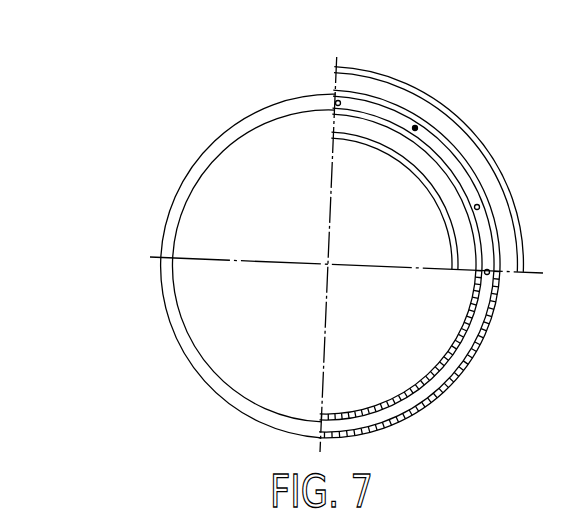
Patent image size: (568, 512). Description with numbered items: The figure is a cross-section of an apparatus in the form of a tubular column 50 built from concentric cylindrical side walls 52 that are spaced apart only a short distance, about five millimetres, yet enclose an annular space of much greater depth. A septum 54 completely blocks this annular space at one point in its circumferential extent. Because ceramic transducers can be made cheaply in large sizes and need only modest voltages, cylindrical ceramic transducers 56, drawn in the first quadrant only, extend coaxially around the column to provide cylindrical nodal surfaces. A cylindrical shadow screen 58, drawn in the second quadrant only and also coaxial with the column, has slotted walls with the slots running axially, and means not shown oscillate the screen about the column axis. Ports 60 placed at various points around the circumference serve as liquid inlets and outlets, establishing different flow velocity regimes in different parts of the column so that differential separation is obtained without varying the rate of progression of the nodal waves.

The tubular column 50 is at (431, 393).
The concentric cylindrical side walls 52 is at (478, 236).
The septum 54 is at (337, 101).
The cylindrical ceramic transducers 56 is at (437, 195).
The cylindrical shadow screen 58 is at (465, 323).
The ports 60 is at (413, 130).